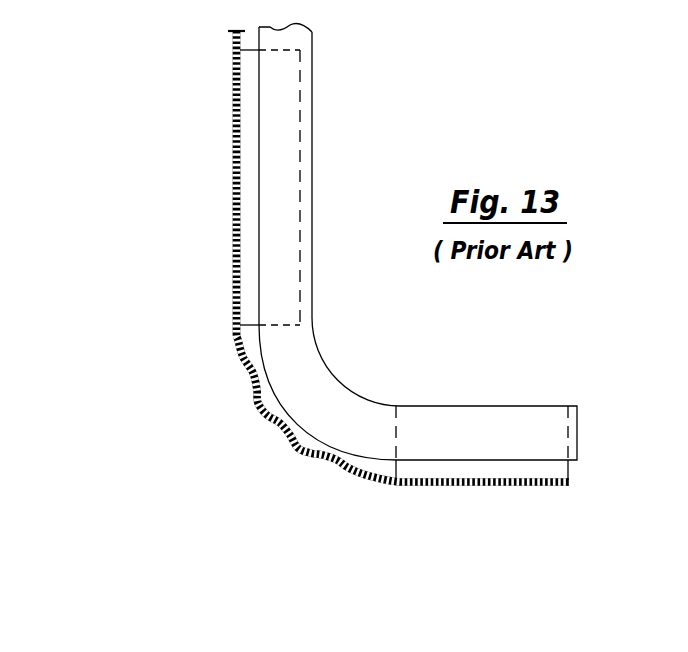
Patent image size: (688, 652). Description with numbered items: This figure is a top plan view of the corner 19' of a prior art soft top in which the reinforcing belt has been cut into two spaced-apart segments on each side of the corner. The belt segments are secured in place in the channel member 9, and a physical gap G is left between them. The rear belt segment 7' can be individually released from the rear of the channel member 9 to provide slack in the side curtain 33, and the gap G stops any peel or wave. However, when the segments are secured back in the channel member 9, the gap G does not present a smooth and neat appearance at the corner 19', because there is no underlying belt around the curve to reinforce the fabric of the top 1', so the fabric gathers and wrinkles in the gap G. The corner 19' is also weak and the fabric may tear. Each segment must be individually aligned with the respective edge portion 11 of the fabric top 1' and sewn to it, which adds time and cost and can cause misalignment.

The fabric top 1' is at (173, 29).
The edge portion 11 is at (225, 160).
The rear belt segment 7' is at (507, 498).
The channel member 9 is at (312, 103).
The corner 19' is at (172, 416).
The gap G is at (282, 456).
The side curtain 33 is at (340, 470).